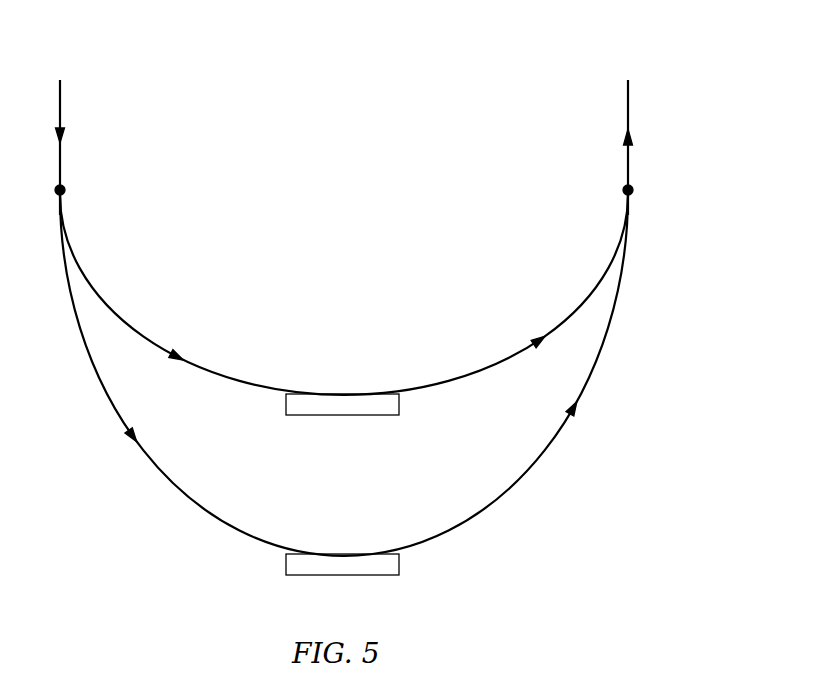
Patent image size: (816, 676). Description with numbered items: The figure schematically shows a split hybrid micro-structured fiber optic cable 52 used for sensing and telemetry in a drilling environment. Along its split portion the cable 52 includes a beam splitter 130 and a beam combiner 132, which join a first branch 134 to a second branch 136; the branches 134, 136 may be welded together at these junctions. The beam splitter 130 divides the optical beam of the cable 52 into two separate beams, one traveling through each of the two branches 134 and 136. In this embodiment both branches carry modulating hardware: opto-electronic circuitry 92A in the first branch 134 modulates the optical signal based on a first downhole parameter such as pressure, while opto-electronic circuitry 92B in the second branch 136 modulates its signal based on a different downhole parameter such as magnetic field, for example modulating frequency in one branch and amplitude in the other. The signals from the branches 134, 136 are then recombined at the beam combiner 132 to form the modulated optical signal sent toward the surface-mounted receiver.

The micro-structured fiber optic cable 52 is at (452, 83).
The beam splitter 130 is at (65, 189).
The beam combiner 132 is at (633, 190).
The first branch 134 is at (510, 490).
The second branch 136 is at (230, 377).
The opto-electronic circuitry 92A is at (400, 558).
The opto-electronic circuitry 92B is at (400, 398).